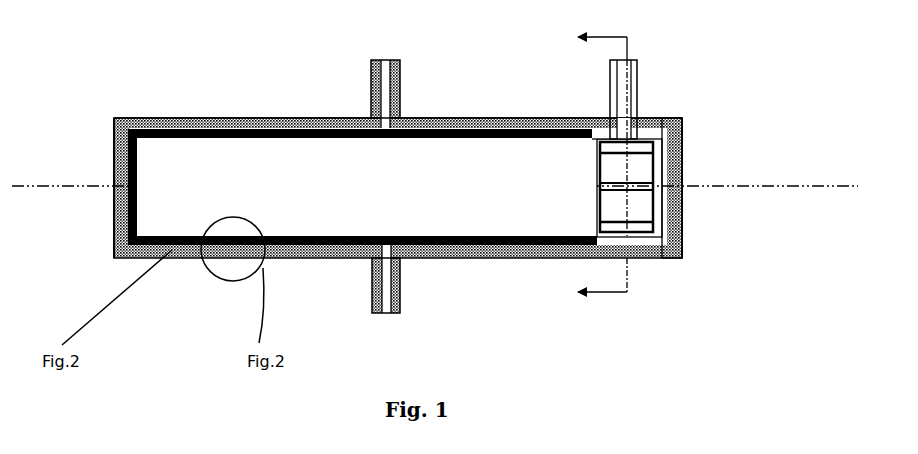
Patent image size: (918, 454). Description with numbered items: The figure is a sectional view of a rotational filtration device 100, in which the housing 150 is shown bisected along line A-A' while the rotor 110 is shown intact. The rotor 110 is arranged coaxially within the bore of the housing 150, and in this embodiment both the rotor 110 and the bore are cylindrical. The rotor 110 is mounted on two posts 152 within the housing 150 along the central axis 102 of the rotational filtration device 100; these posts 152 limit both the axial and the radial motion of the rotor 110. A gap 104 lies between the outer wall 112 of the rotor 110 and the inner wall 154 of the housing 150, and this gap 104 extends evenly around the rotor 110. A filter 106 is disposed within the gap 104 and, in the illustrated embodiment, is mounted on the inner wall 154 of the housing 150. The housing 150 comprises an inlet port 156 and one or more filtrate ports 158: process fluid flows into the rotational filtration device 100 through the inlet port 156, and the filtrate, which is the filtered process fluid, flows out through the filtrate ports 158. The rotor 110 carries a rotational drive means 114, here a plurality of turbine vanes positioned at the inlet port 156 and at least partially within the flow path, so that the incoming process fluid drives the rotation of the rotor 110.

The rotational filtration device 100 is at (318, 73).
The central axis 102 is at (795, 184).
The gap 104 is at (153, 120).
The filter 106 is at (598, 132).
The rotor 110 is at (433, 167).
The outer wall 112 is at (131, 121).
The rotational drive means 114 is at (637, 207).
The housing 150 is at (686, 248).
The posts 152 is at (112, 181).
The inner wall 154 is at (176, 120).
The inlet port 156 is at (627, 88).
The filtrate ports 158 is at (387, 70).